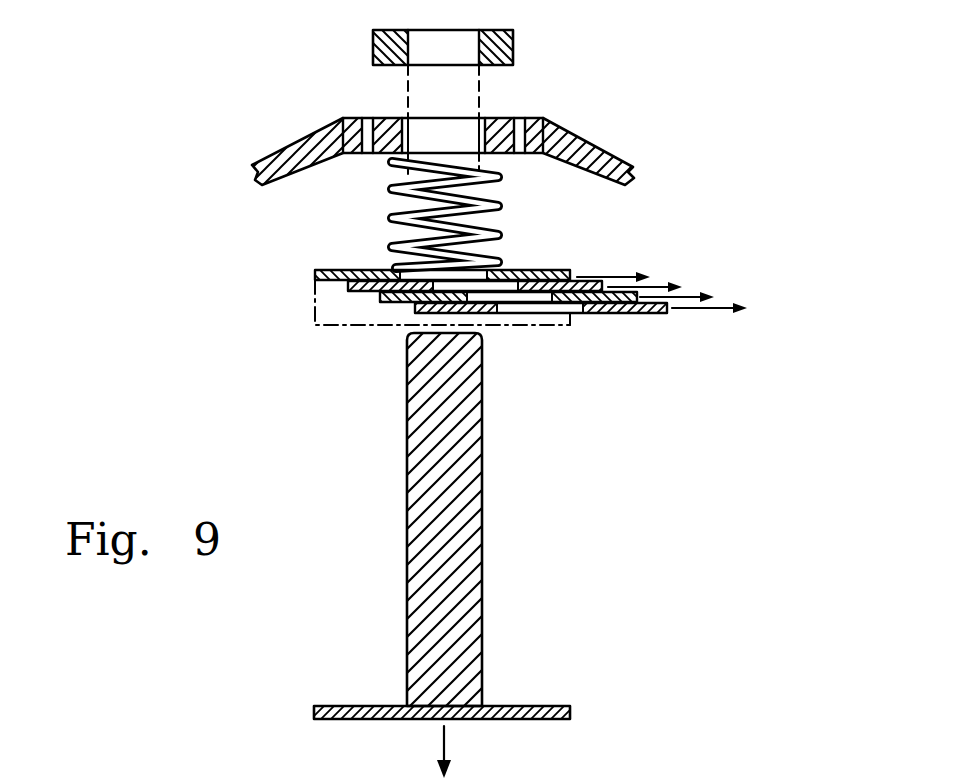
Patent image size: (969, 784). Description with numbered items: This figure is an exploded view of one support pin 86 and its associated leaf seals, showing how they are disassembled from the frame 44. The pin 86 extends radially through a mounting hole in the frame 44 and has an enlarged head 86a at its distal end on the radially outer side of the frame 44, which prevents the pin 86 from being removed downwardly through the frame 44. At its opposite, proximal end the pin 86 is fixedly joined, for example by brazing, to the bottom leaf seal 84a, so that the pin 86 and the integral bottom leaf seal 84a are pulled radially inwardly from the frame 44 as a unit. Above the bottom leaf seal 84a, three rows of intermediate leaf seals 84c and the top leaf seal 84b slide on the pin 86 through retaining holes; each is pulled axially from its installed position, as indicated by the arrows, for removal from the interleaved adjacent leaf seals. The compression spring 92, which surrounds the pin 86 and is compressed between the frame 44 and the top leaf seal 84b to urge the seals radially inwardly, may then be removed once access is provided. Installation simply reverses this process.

The enlarged head 86a is at (513, 46).
The frame 44 is at (590, 147).
The compression spring 92 is at (390, 186).
The top leaf seal 84b is at (553, 270).
The intermediate leaf seals 84c is at (757, 283).
The support pin 86 is at (483, 514).
The bottom leaf seal 84a is at (571, 713).